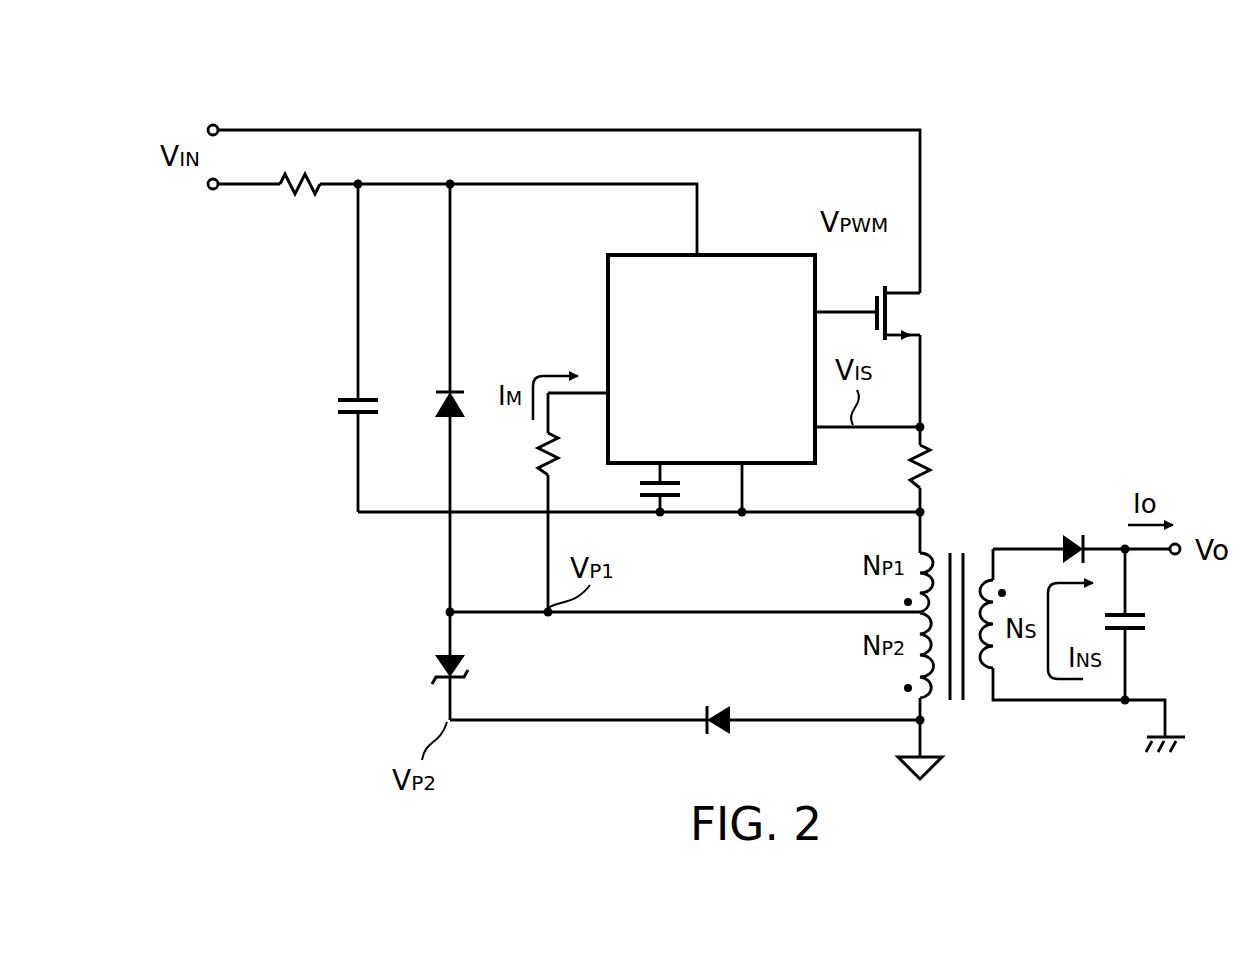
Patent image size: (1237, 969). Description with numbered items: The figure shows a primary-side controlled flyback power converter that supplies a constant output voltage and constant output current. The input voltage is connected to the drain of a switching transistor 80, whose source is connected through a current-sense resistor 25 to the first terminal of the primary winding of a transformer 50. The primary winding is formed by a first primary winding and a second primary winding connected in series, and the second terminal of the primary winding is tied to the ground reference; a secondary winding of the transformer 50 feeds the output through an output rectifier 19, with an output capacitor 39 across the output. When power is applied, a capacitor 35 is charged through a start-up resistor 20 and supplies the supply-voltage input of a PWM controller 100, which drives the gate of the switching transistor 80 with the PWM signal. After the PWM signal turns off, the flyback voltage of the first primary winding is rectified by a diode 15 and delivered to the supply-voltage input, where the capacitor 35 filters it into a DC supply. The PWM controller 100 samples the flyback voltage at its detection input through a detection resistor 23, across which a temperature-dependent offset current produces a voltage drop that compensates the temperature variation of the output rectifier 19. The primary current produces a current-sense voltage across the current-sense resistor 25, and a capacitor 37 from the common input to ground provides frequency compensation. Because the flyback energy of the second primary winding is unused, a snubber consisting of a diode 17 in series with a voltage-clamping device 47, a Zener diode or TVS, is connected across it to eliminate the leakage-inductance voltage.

The start-up resistor 20 is at (297, 167).
The PWM controller 100 is at (745, 255).
The switching transistor 80 is at (852, 243).
The capacitor 35 is at (335, 405).
The diode 15 is at (432, 370).
The detection resistor 23 is at (540, 465).
The capacitor 37 is at (685, 487).
The current-sense resistor 25 is at (900, 468).
The transformer 50 is at (950, 540).
The output rectifier 19 is at (1070, 535).
The output capacitor 39 is at (1150, 622).
The voltage-clamping device 47 is at (430, 668).
The diode 17 is at (707, 697).